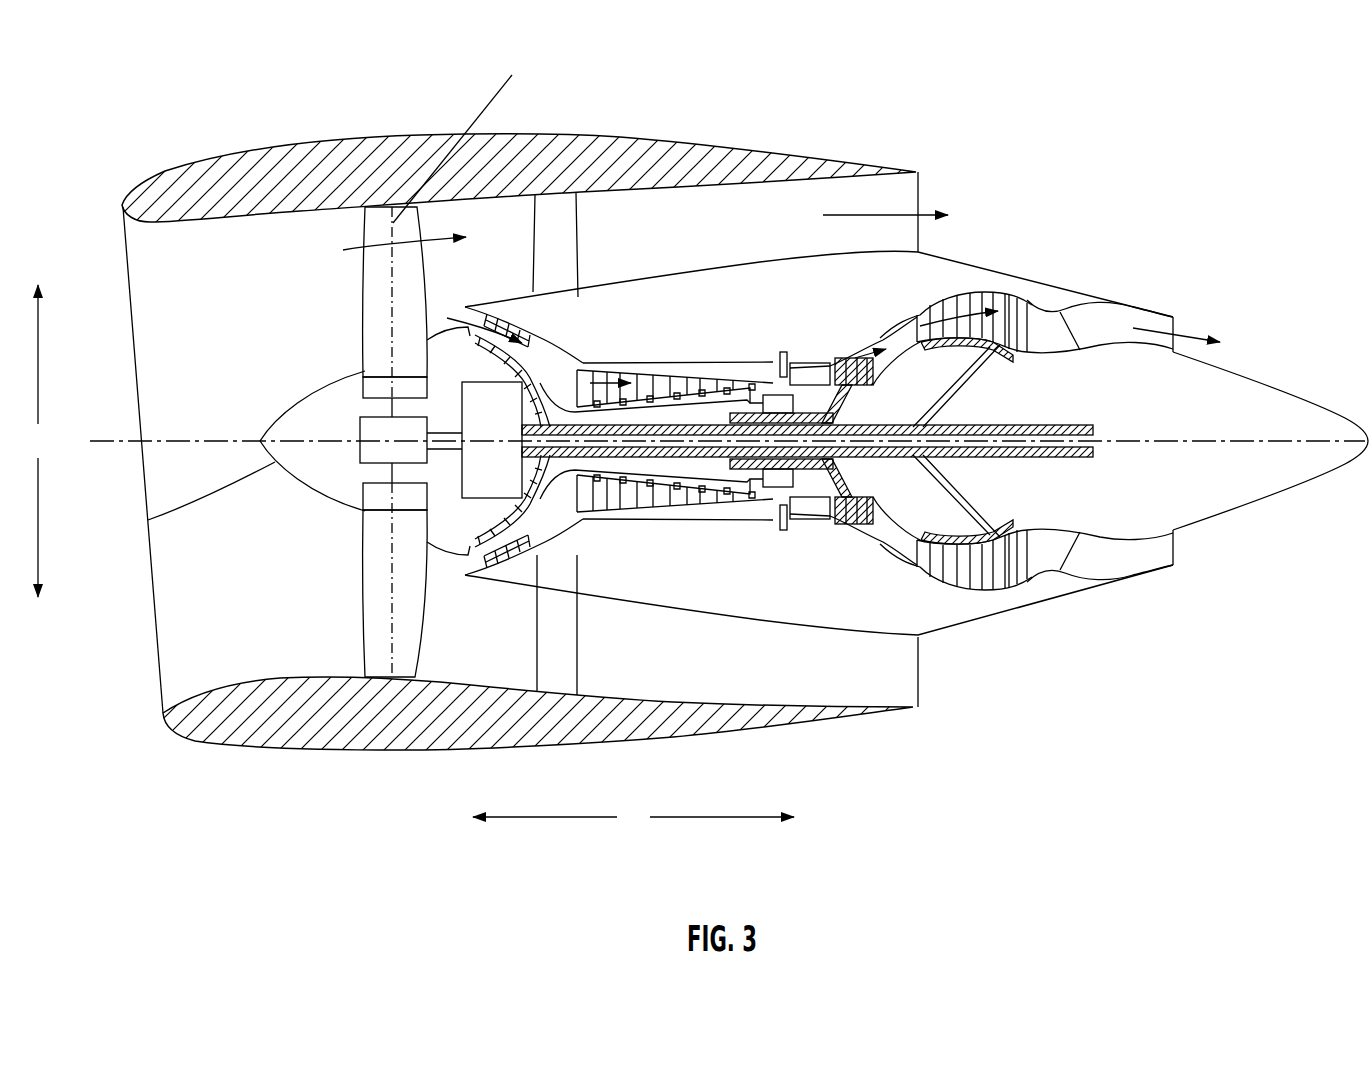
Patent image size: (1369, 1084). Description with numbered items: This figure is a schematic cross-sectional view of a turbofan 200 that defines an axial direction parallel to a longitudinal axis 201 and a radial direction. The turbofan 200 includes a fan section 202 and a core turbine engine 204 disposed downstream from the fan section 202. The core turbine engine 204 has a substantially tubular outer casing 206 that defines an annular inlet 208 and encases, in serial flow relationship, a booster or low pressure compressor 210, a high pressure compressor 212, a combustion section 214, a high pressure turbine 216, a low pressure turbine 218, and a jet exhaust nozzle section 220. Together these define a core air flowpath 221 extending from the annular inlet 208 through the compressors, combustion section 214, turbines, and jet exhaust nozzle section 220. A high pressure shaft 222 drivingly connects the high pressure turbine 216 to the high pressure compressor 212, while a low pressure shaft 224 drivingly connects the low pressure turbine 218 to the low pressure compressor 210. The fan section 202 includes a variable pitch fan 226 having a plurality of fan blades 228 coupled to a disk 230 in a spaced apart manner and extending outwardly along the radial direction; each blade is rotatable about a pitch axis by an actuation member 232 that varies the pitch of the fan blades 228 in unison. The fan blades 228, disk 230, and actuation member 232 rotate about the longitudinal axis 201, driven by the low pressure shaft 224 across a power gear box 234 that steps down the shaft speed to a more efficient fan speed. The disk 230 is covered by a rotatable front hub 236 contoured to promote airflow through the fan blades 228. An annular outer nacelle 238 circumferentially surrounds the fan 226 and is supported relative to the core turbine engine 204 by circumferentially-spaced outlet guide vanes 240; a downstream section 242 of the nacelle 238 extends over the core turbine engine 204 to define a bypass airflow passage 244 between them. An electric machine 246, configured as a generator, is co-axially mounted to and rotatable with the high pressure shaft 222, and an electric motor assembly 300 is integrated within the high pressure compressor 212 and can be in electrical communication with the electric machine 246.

The turbofan 200 is at (1078, 146).
The longitudinal axis 201 is at (1140, 440).
The fan section 202 is at (313, 220).
The core turbine engine 204 is at (699, 240).
The outer casing 206 is at (759, 628).
The annular inlet 208 is at (474, 557).
The low pressure compressor 210 is at (509, 575).
The high pressure compressor 212 is at (610, 507).
The combustion section 214 is at (803, 516).
The high pressure turbine 216 is at (876, 522).
The low pressure turbine 218 is at (1010, 596).
The jet exhaust nozzle section 220 is at (1076, 559).
The core air flowpath 221 is at (561, 526).
The high pressure shaft 222 is at (806, 362).
The low pressure shaft 224 is at (1087, 422).
The variable pitch fan 226 is at (315, 502).
The fan blades 228 is at (357, 610).
The disk 230 is at (380, 390).
The actuation member 232 is at (363, 417).
The power gear box 234 is at (541, 390).
The front hub 236 is at (148, 520).
The outer nacelle 238 is at (420, 745).
The outlet guide vanes 240 is at (577, 225).
The downstream section 242 is at (831, 158).
The bypass airflow passage 244 is at (788, 226).
The electric machine 246 is at (777, 398).
The electric motor assembly 300 is at (714, 371).